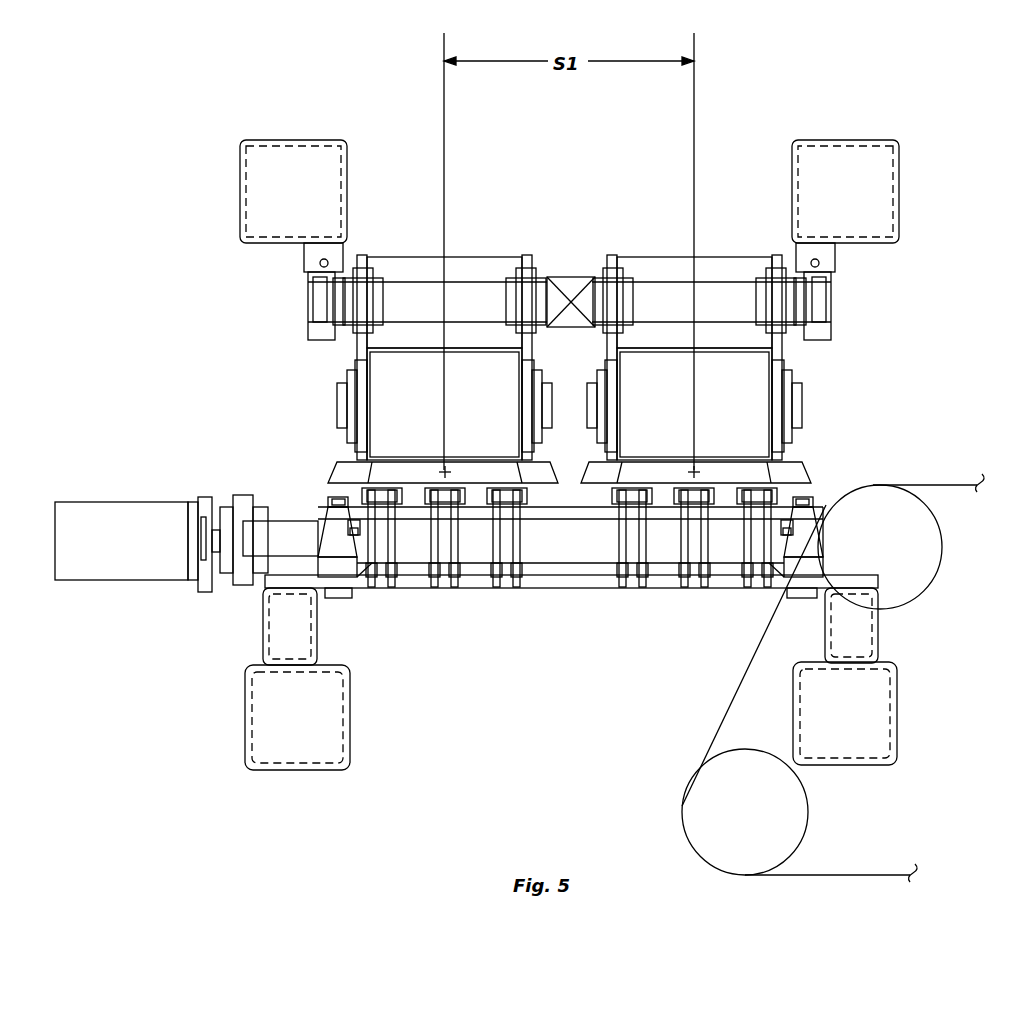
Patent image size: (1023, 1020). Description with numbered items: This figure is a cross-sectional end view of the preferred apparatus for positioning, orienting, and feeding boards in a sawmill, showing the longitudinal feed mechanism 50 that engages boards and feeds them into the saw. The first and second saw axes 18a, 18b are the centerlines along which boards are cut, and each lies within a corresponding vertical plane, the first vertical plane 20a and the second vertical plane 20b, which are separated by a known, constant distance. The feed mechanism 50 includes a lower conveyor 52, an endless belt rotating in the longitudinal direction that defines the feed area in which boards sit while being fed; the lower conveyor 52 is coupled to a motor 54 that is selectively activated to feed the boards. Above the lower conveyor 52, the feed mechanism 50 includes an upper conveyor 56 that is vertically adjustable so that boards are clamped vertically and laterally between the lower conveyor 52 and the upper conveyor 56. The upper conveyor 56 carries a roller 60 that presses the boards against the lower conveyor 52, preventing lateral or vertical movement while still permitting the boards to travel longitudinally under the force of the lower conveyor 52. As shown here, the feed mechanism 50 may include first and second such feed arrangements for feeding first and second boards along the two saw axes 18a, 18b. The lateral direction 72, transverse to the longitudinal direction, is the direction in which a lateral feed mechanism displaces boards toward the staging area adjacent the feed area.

The first vertical plane 20a is at (441, 97).
The second vertical plane 20b is at (694, 90).
The upper conveyor 56 is at (466, 248).
The roller 60 is at (420, 399).
The first saw axis 18a is at (443, 470).
The second saw axis 18b is at (700, 472).
The longitudinal feed mechanism 50 is at (493, 598).
The lower conveyor 52 is at (625, 590).
The motor 54 is at (100, 582).
The lateral direction 72 is at (892, 441).